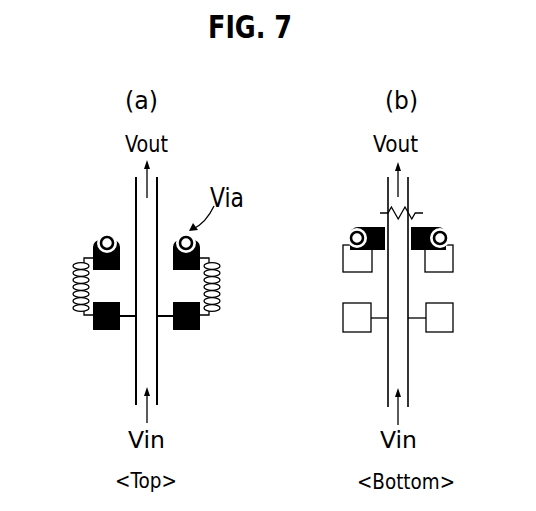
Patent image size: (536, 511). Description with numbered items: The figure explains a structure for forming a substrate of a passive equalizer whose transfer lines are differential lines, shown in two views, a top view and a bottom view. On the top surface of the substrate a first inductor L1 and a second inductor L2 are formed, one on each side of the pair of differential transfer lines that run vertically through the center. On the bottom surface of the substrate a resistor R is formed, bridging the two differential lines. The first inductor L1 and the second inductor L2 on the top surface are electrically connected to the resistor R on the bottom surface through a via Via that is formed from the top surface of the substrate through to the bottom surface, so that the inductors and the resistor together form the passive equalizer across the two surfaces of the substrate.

The via Via is at (99, 229).
The first inductor L1 is at (70, 286).
The second inductor L2 is at (226, 286).
The resistor R is at (406, 203).